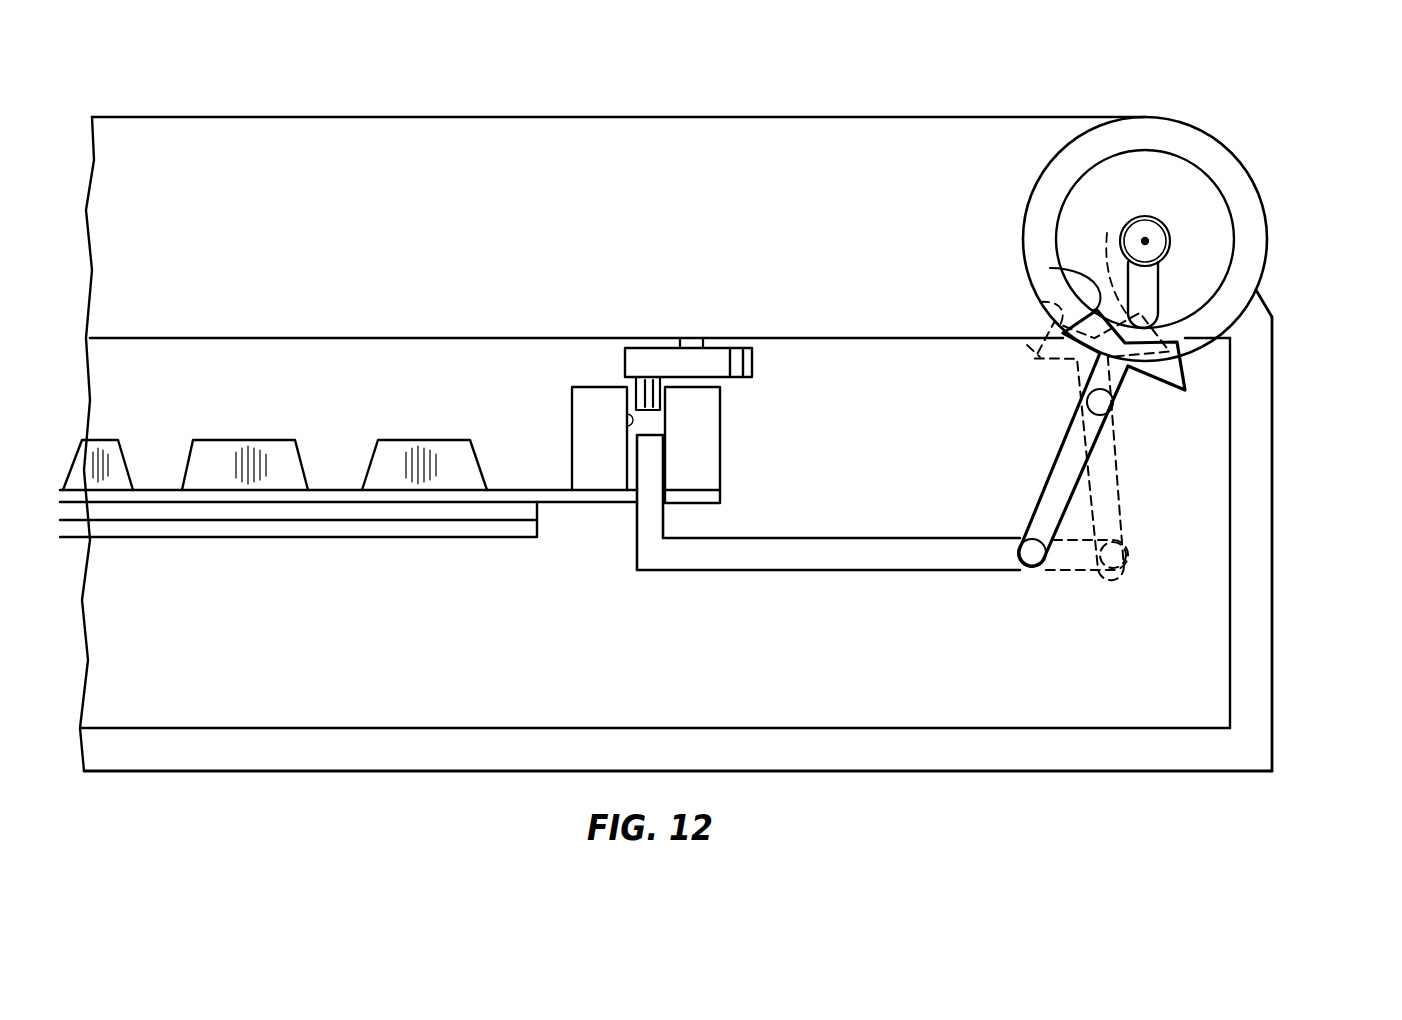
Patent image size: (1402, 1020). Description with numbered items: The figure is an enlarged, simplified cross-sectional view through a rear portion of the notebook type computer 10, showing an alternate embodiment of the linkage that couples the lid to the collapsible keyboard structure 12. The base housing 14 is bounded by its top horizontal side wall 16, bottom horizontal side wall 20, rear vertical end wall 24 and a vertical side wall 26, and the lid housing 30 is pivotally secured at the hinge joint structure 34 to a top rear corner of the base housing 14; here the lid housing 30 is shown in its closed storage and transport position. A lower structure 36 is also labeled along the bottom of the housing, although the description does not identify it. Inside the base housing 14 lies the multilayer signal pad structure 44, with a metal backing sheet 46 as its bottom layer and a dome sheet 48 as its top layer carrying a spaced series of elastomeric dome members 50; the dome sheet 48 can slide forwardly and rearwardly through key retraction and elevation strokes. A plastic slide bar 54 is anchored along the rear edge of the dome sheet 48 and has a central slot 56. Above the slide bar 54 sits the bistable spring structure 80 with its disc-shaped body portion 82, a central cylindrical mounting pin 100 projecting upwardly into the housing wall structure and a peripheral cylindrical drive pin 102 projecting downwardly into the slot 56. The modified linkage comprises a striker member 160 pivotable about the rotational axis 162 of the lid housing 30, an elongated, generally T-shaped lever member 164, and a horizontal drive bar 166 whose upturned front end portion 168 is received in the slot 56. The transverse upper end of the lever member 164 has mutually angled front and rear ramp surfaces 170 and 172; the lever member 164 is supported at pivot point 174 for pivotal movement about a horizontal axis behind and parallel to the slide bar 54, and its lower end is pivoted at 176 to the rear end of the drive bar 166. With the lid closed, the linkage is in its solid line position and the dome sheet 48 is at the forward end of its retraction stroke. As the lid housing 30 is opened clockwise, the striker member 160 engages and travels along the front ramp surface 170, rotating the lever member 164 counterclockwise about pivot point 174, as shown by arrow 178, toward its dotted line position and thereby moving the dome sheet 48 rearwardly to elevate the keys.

The notebook type computer 10 is at (1310, 560).
The collapsible keyboard structure 12 is at (352, 378).
The base housing 14 is at (1285, 664).
The top horizontal side wall 16 is at (833, 337).
The bottom horizontal side wall 20 is at (1020, 772).
The rear vertical end wall 24 is at (1273, 455).
The vertical side wall 26 is at (884, 666).
The lid housing 30 is at (722, 112).
The hinge joint structure 34 is at (1230, 140).
The base plate 36 is at (378, 703).
The multilayer signal pad structure 44 is at (562, 520).
The metal backing sheet 46 is at (318, 538).
The dome sheet 48 is at (536, 490).
The elastomeric dome members 50 is at (106, 440).
The slide bar 54 is at (720, 462).
The central slot 56 is at (640, 402).
The bistable spring structure 80 is at (778, 363).
The body portion 82 is at (625, 360).
The central cylindrical mounting pin 100 is at (690, 337).
The peripheral cylindrical drive pin 102 is at (662, 400).
The striker member 160 is at (1160, 300).
The rotational axis 162 is at (1150, 241).
The lever member 164 is at (1052, 450).
The horizontal drive bar 166 is at (915, 573).
The upturned front end portion 168 is at (636, 514).
The front ramp surface 170 is at (1050, 268).
The rear ramp surface 172 is at (1110, 248).
The pivot point 174 is at (1088, 400).
The pivot 176 is at (1035, 545).
The arrow 178 is at (1148, 498).